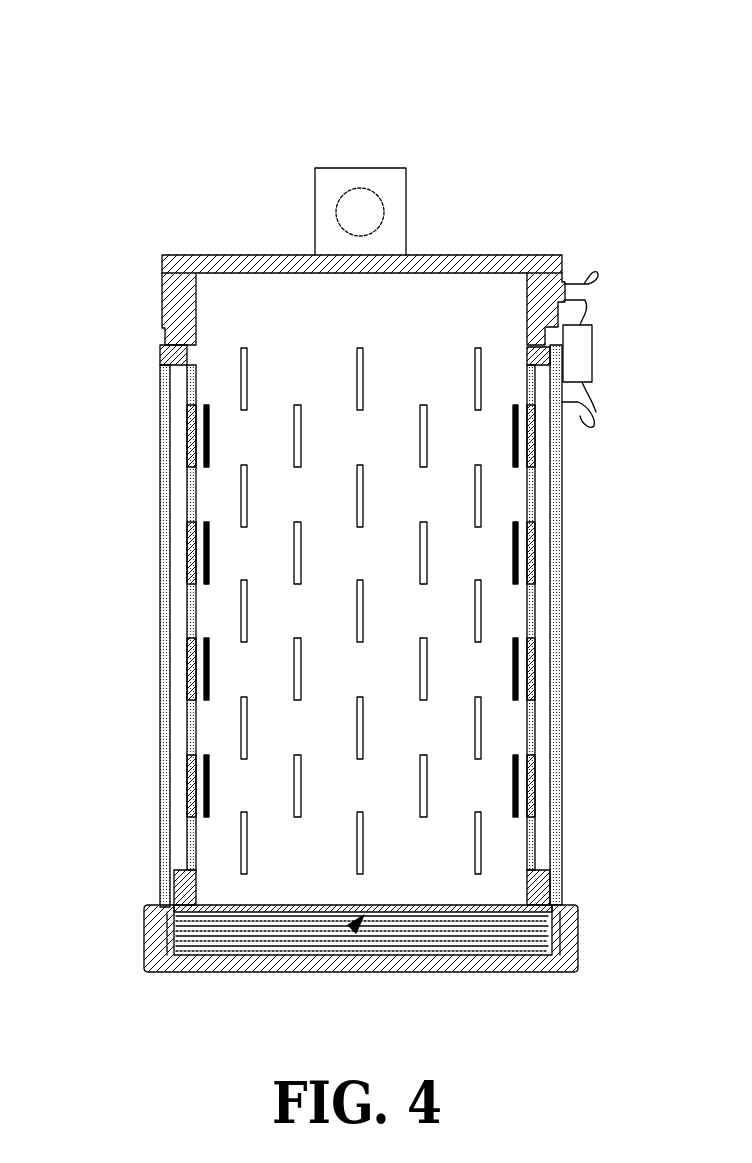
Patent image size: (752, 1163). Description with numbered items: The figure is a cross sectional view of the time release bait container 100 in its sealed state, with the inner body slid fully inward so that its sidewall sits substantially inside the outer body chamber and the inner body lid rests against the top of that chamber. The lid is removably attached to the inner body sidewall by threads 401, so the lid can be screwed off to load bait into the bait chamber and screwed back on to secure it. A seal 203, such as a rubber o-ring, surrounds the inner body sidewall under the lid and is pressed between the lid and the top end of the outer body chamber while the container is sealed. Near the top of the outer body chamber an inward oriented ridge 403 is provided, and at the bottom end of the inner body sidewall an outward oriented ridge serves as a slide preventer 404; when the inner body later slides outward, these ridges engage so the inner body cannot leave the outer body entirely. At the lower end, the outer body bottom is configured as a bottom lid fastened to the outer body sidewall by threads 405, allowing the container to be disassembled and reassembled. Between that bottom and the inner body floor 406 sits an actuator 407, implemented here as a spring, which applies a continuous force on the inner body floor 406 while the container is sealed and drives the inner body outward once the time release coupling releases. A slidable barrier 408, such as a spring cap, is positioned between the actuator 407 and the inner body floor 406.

The time release bait container 100 is at (463, 82).
The seal 203 is at (165, 336).
The threads 401 is at (520, 308).
The inward oriented ridge 403 is at (536, 368).
The slide preventer 404 is at (535, 870).
The threads 405 is at (162, 905).
The inner body floor 406 is at (462, 912).
The actuator 407 is at (500, 942).
The slidable barrier 408 is at (360, 924).